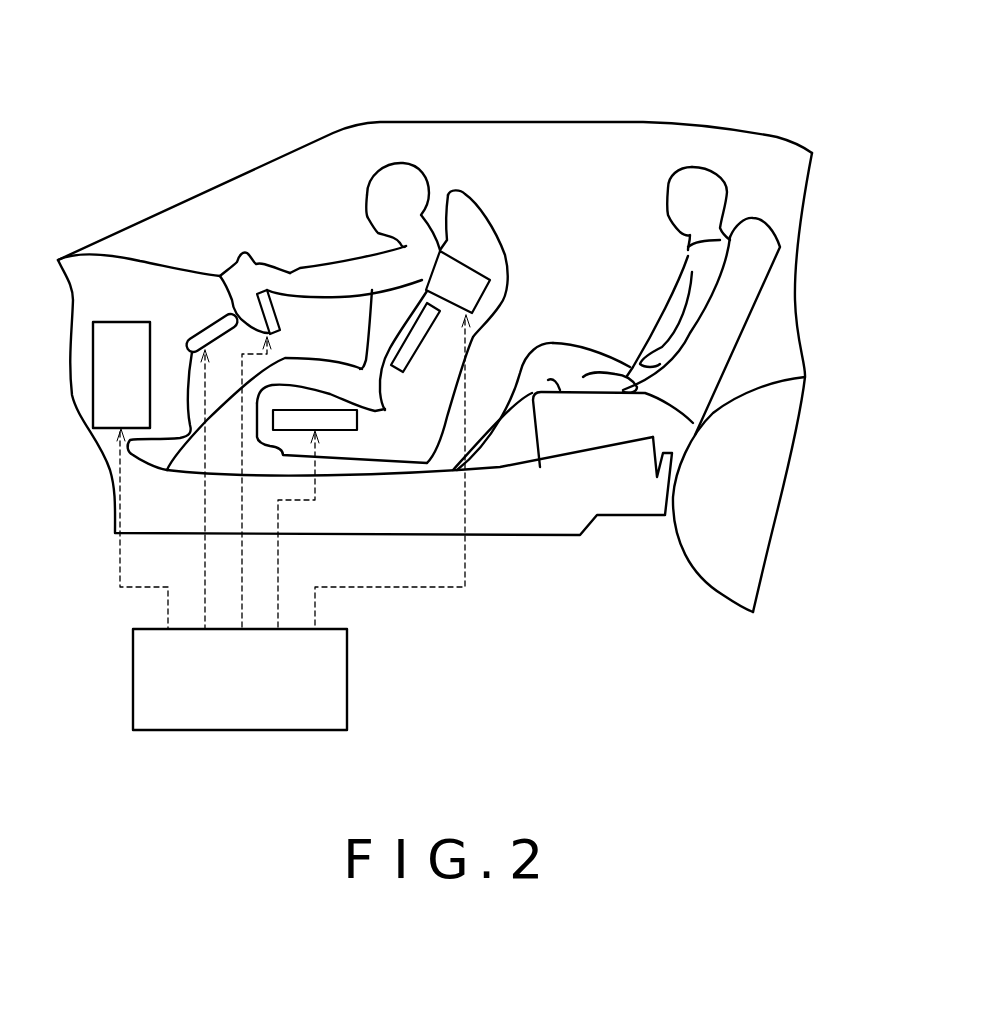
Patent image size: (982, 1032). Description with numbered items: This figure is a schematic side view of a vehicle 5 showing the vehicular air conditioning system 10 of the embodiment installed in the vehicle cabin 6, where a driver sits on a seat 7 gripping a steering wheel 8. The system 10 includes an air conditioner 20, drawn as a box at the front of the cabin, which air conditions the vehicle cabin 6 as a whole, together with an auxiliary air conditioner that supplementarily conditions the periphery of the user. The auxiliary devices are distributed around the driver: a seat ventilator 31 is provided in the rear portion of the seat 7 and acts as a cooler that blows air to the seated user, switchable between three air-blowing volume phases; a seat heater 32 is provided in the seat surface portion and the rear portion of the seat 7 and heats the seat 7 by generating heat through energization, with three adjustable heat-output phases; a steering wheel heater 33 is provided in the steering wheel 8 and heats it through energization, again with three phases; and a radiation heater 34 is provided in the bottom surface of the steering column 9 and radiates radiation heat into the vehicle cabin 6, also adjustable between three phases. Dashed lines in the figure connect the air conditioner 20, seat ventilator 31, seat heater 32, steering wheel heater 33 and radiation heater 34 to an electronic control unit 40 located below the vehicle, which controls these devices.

The vehicle body 5 is at (654, 123).
The vehicle cabin 6 is at (595, 249).
The seat 7 is at (459, 203).
The steering wheel 8 is at (246, 253).
The steering column 9 is at (212, 274).
The vehicular air conditioning system 10 is at (360, 90).
The air conditioner 20 is at (122, 322).
The seat ventilator 31 is at (478, 273).
The seat heater 32 is at (410, 374).
The steering wheel heater 33 is at (280, 292).
The radiation heater 34 is at (197, 320).
The electronic control unit (ECU) 40 is at (349, 675).